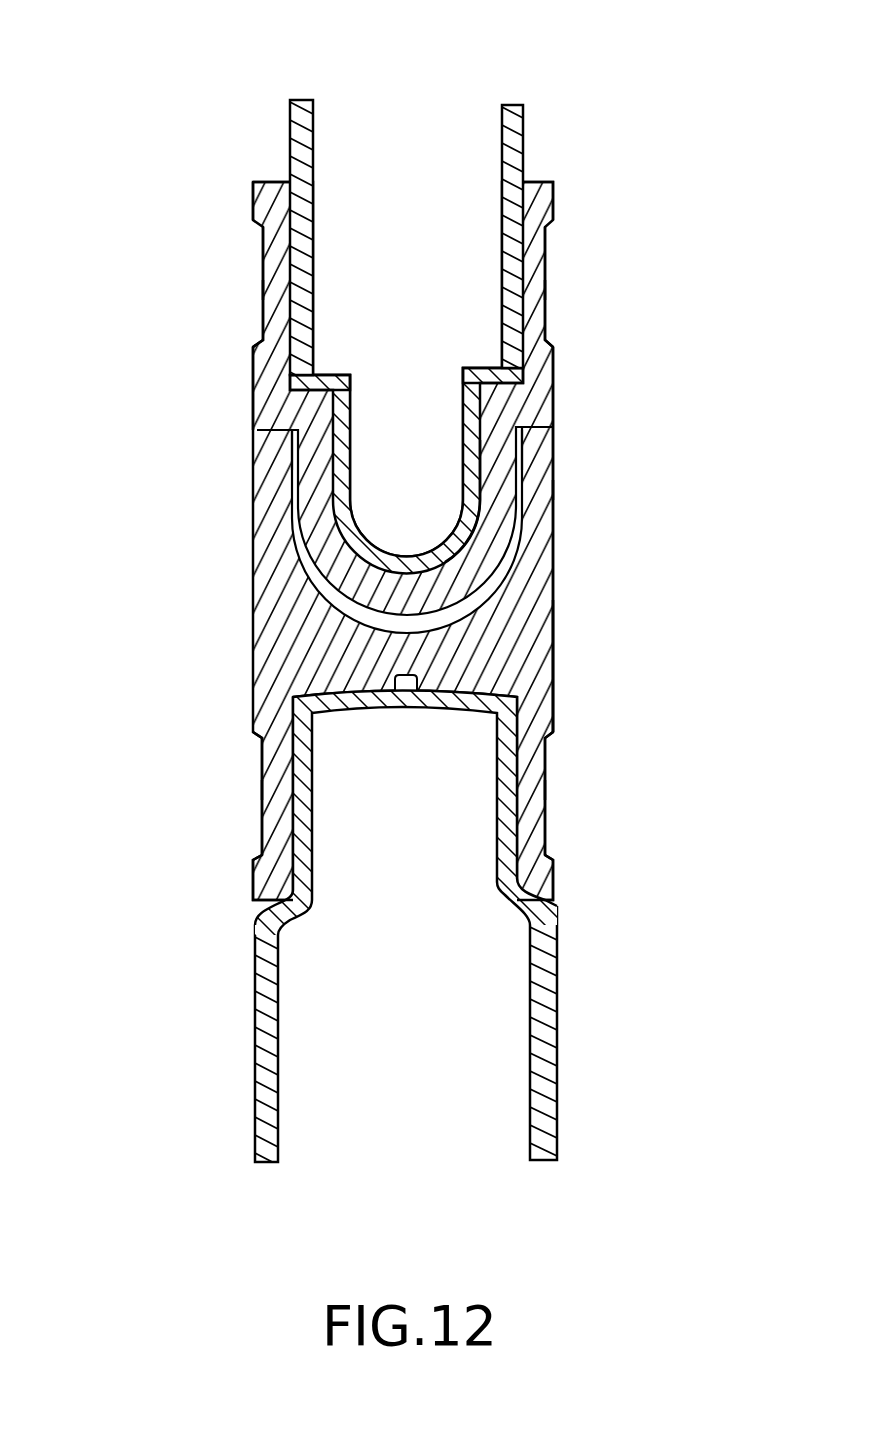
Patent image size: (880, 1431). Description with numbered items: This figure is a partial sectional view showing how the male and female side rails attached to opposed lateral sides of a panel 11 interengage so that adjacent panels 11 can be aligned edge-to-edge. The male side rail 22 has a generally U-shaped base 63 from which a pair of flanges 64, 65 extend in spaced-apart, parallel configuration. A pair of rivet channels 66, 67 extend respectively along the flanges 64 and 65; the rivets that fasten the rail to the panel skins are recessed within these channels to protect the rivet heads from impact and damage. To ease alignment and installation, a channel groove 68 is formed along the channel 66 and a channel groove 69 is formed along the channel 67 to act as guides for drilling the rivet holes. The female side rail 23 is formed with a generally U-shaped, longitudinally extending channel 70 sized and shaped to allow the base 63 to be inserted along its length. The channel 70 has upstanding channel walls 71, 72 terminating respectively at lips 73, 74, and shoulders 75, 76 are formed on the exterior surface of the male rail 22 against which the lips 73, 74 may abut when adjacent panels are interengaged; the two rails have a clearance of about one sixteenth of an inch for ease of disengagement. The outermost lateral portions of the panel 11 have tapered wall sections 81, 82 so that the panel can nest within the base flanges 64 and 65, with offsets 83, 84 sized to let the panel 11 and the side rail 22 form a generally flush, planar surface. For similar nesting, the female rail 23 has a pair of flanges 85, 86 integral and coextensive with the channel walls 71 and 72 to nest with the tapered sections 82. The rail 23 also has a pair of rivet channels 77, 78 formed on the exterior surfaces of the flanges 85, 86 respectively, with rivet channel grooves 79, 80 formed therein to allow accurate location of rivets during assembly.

The panel 11 is at (422, 160).
The male side rail 22 is at (553, 375).
The female side rail 23 is at (555, 657).
The U-shaped base 63 is at (490, 519).
The flange 64 is at (256, 198).
The flange 65 is at (548, 203).
The rivet channel 66 is at (263, 288).
The rivet channel 67 is at (547, 315).
The channel groove 68 is at (263, 260).
The channel groove 69 is at (547, 282).
The channel 70 is at (387, 622).
The channel wall 71 is at (255, 570).
The channel wall 72 is at (553, 482).
The lip 73 is at (258, 440).
The lip 74 is at (553, 463).
The shoulder 75 is at (276, 412).
The shoulder 76 is at (553, 410).
The rivet channel 77 is at (262, 828).
The rivet channel 78 is at (550, 812).
The rivet channel groove 79 is at (262, 758).
The rivet channel groove 80 is at (553, 760).
The tapered wall section 81 is at (461, 441).
The tapered wall section 82 is at (313, 840).
The offset 83 is at (333, 370).
The offset 84 is at (488, 368).
The flange 85 is at (258, 872).
The flange 86 is at (557, 878).